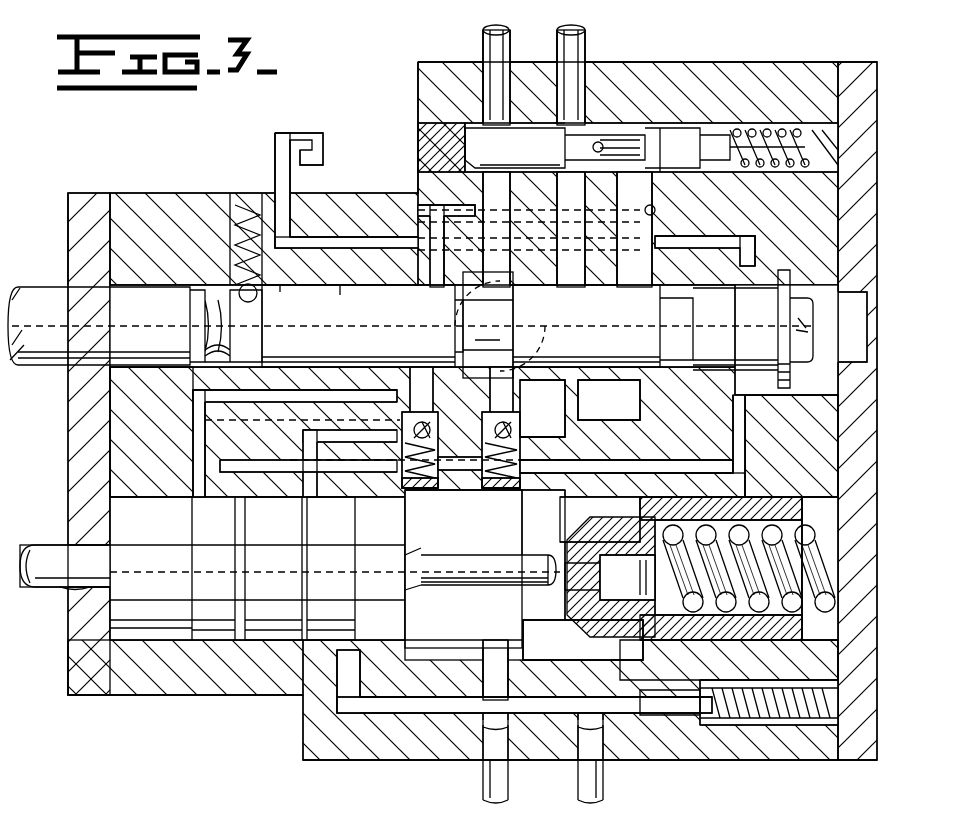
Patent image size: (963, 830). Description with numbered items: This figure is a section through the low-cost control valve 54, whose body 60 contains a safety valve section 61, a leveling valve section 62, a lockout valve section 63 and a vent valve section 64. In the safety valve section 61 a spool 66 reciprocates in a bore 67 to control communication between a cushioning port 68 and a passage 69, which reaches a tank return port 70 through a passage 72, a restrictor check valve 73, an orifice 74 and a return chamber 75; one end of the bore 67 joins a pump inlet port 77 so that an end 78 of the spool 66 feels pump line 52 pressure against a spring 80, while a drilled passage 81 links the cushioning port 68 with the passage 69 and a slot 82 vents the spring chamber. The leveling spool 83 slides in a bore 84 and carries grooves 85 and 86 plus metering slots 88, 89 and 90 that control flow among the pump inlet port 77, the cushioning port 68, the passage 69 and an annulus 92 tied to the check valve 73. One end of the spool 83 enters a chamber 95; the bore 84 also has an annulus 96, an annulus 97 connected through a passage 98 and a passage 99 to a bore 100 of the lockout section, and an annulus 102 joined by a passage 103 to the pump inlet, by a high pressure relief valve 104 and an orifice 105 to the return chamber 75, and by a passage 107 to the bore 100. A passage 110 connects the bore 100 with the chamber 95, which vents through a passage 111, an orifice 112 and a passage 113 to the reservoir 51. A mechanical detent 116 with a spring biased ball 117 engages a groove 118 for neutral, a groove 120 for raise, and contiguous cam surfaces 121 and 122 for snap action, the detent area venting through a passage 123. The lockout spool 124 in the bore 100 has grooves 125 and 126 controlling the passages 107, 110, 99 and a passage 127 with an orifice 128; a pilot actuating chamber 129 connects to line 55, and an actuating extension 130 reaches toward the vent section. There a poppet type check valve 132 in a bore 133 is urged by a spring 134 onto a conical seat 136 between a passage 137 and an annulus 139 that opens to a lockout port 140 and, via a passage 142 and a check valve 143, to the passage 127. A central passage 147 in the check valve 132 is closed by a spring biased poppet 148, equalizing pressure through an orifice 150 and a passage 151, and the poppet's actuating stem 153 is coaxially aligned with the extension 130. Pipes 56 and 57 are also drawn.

The reservoir 51 is at (332, 162).
The pump line 52 is at (488, 35).
The control valve 54 is at (607, 42).
The line 55 is at (45, 545).
The pipe 56 is at (560, 36).
The drain pipes 57 is at (604, 783).
The body 60 is at (682, 75).
The safety valve section 61 is at (402, 90).
The leveling valve section 62 is at (63, 274).
The lockout valve section 63 is at (108, 714).
The vent valve section 64 is at (774, 772).
The spool 66 is at (520, 150).
The bore 67 is at (663, 128).
The cushioning port 68 is at (558, 100).
The passage 69 is at (655, 210).
The tank return port 70 is at (505, 630).
The passage 72 is at (420, 205).
The restrictor check valve 73 is at (495, 428).
The orifice 74 is at (436, 484).
The return chamber 75 is at (453, 623).
The pump inlet port 77 is at (486, 55).
The end 78 is at (462, 133).
The spring 80 is at (785, 130).
The drilled passage 81 is at (600, 142).
The slot 82 is at (663, 172).
The leveling spool 83 is at (96, 333).
The bore 84 is at (345, 292).
The groove 85 is at (513, 318).
The groove 86 is at (693, 310).
The metering slot 88 is at (445, 322).
The metering slot 89 is at (522, 345).
The metering slot 90 is at (642, 328).
The annulus 92 is at (375, 385).
The chamber 95 is at (815, 398).
The annulus 96 is at (655, 282).
The annulus 97 is at (580, 385).
The passage 98 is at (562, 196).
The passage 99 is at (568, 440).
The bore 100 is at (168, 505).
The annulus 102 is at (510, 380).
The passage 103 is at (483, 196).
The high pressure relief valve 104 is at (514, 416).
The orifice 105 is at (504, 490).
The passage 107 is at (215, 400).
The passage 110 is at (622, 462).
The passage 111 is at (755, 250).
The orifice 112 is at (696, 236).
The passage 113 is at (288, 213).
The mechanical detent 116 is at (186, 380).
The ball 117 is at (240, 286).
The groove 118 is at (240, 292).
The groove 120 is at (195, 315).
The cam surface 121 is at (262, 320).
The cam surface 122 is at (280, 290).
The passage 123 is at (290, 248).
The spool 124 is at (290, 568).
The groove 125 is at (195, 625).
The groove 126 is at (352, 620).
The passage 127 is at (380, 712).
The orifice 128 is at (338, 661).
The pilot actuating chamber 129 is at (60, 592).
The actuating extension 130 is at (458, 520).
The check valve 132 is at (722, 497).
The bore 133 is at (790, 497).
The spring 134 is at (832, 612).
The conical seat 136 is at (575, 625).
The passage 137 is at (535, 520).
The annulus 139 is at (675, 652).
The lockout port 140 is at (580, 672).
The passage 142 is at (632, 672).
The check valve 143 is at (676, 714).
The central passage 147 is at (568, 590).
The poppet 148 is at (640, 537).
The orifice 150 is at (660, 630).
The passage 151 is at (658, 576).
The actuating stem 153 is at (550, 574).